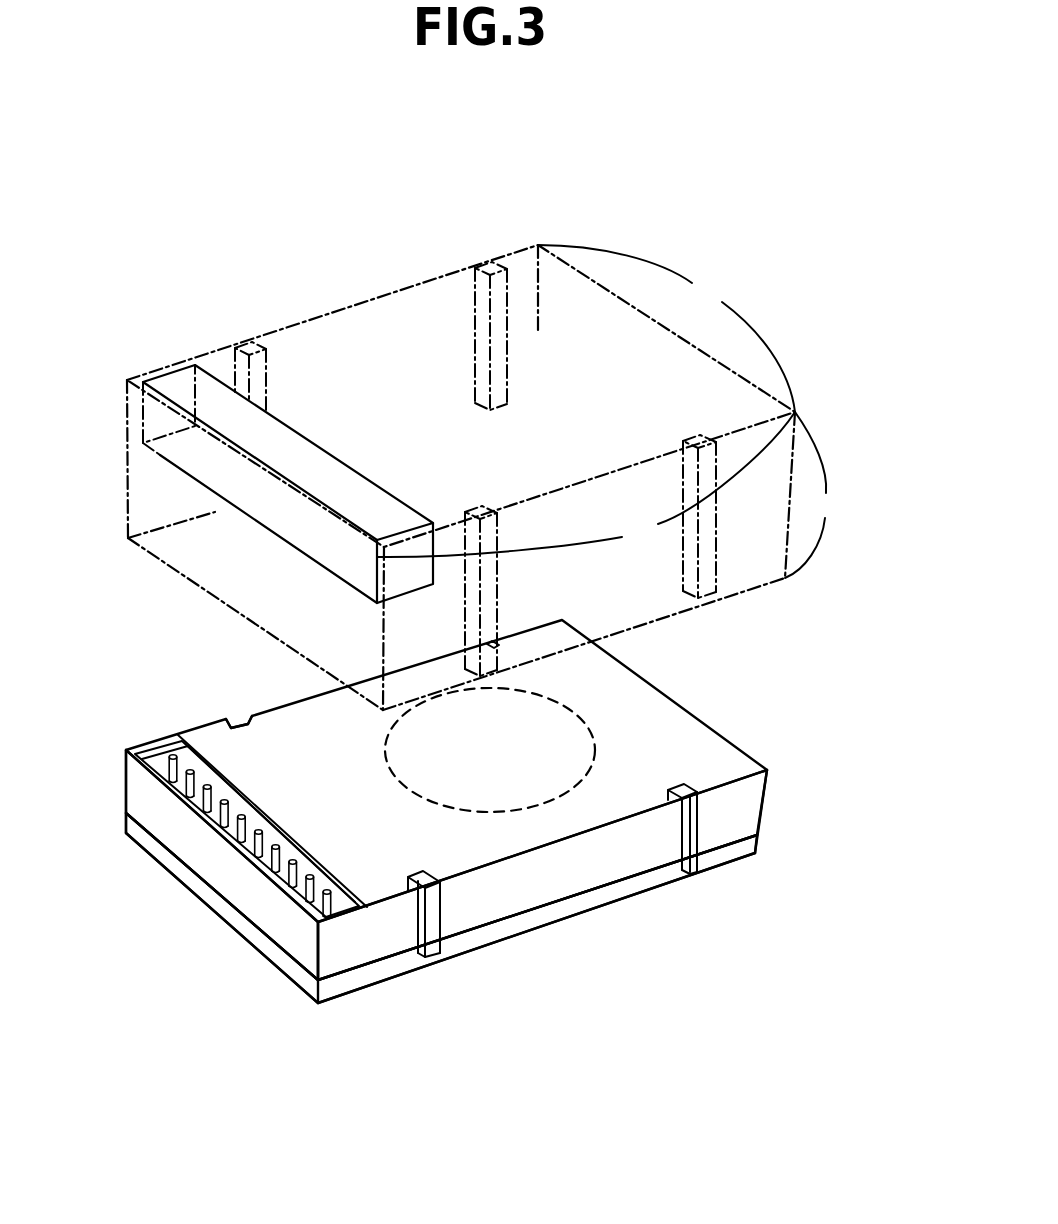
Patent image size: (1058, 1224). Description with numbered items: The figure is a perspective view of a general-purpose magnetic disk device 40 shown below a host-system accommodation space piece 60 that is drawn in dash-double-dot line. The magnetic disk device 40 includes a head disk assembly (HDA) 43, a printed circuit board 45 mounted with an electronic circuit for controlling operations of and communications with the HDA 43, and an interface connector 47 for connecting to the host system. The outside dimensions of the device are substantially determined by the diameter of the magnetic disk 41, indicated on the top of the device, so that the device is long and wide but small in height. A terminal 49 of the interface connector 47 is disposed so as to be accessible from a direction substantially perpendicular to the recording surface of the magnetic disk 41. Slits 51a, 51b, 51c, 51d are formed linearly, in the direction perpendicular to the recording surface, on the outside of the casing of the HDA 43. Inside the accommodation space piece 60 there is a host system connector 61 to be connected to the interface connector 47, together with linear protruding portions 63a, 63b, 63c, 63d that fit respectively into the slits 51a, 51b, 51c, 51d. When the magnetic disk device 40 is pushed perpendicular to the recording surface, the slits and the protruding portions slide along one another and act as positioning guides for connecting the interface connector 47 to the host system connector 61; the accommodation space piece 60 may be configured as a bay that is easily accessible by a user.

The general-purpose magnetic disk device 40 is at (708, 702).
The magnetic disk 41 is at (600, 744).
The head disk assembly (HDA) 43 is at (587, 868).
The printed circuit board 45 is at (488, 933).
The interface connector 47 is at (213, 868).
The terminal 49 is at (140, 750).
The slit 51a is at (433, 923).
The slit 51b is at (690, 838).
The slit 51c is at (492, 644).
The slit 51d is at (237, 720).
The accommodation space piece 60 is at (822, 380).
The host system connector 61 is at (292, 428).
The linear protruding portion 63a is at (470, 508).
The linear protruding portion 63b is at (693, 436).
The linear protruding portion 63c is at (482, 263).
The linear protruding portion 63d is at (246, 346).